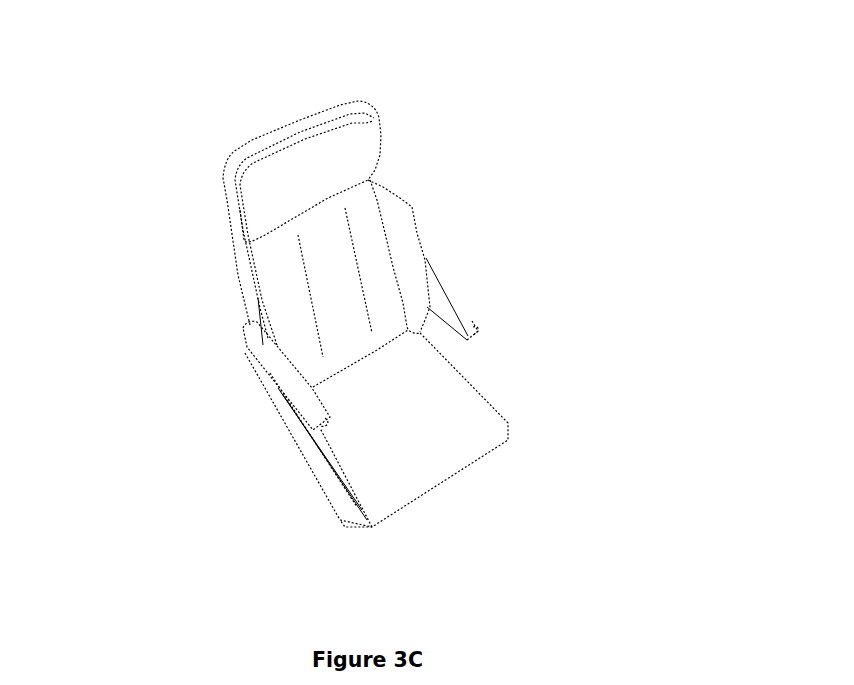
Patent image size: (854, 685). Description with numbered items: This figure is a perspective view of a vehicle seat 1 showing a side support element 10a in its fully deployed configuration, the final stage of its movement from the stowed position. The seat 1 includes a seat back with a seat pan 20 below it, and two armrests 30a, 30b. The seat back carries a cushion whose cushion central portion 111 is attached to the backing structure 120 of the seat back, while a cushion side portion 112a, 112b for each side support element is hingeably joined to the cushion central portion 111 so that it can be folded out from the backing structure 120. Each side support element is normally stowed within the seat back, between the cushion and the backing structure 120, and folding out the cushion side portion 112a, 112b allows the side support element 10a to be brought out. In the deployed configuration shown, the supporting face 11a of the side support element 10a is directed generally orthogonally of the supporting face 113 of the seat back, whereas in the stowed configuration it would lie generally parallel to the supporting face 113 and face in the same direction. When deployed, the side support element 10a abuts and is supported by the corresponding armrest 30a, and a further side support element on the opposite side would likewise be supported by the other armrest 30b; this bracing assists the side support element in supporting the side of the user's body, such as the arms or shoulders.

The vehicle seat 1 is at (560, 60).
The side support element 10a is at (400, 196).
The supporting face 11a is at (405, 228).
The seat pan 20 is at (442, 417).
The armrest 30a is at (463, 317).
The armrest 30b is at (312, 405).
The cushion central portion 111 is at (319, 227).
The cushion side portion 112a is at (285, 254).
The cushion side portion 112b is at (365, 212).
The supporting face of the seat back 113 is at (338, 290).
The backing structure 120 is at (250, 285).